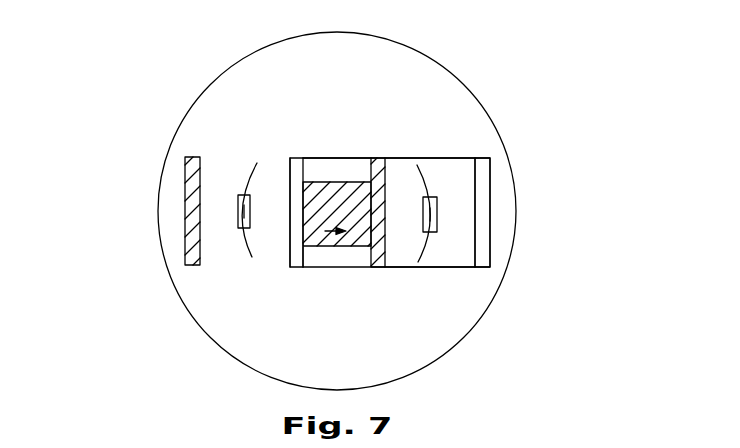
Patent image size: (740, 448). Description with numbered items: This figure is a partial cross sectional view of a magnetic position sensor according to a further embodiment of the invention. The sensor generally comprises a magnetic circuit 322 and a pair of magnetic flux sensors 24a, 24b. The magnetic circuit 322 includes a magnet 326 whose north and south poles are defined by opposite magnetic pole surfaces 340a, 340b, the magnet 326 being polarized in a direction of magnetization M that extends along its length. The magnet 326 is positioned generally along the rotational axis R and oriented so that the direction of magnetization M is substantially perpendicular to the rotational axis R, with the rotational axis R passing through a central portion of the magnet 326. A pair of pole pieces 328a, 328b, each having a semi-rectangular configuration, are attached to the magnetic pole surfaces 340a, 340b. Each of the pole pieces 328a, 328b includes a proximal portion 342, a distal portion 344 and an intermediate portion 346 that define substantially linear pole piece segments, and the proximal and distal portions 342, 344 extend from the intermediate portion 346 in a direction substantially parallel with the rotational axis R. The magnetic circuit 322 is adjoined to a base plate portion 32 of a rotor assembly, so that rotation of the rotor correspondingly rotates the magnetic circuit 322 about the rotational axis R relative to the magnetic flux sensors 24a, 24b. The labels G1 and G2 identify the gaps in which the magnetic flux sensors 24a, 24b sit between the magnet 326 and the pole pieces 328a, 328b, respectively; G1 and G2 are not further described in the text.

The magnetic circuit 322 is at (410, 113).
The base plate portion 32 is at (205, 130).
The magnet 326 is at (203, 62).
The proximal portion 342 is at (290, 198).
The intermediate portion 346 is at (340, 172).
The pole piece 328a is at (170, 183).
The pole piece 328b is at (505, 183).
The distal portion 344 is at (190, 245).
The magnetic flux sensor 24a is at (222, 218).
The magnetic flux sensor 24b is at (452, 221).
The magnetic pole surface 340a is at (385, 210).
The magnetic pole surface 340b is at (290, 226).
The direction of magnetization M is at (336, 238).
The rotational axis R is at (309, 267).
The first gap G1 is at (275, 187).
The second gap G2 is at (454, 188).